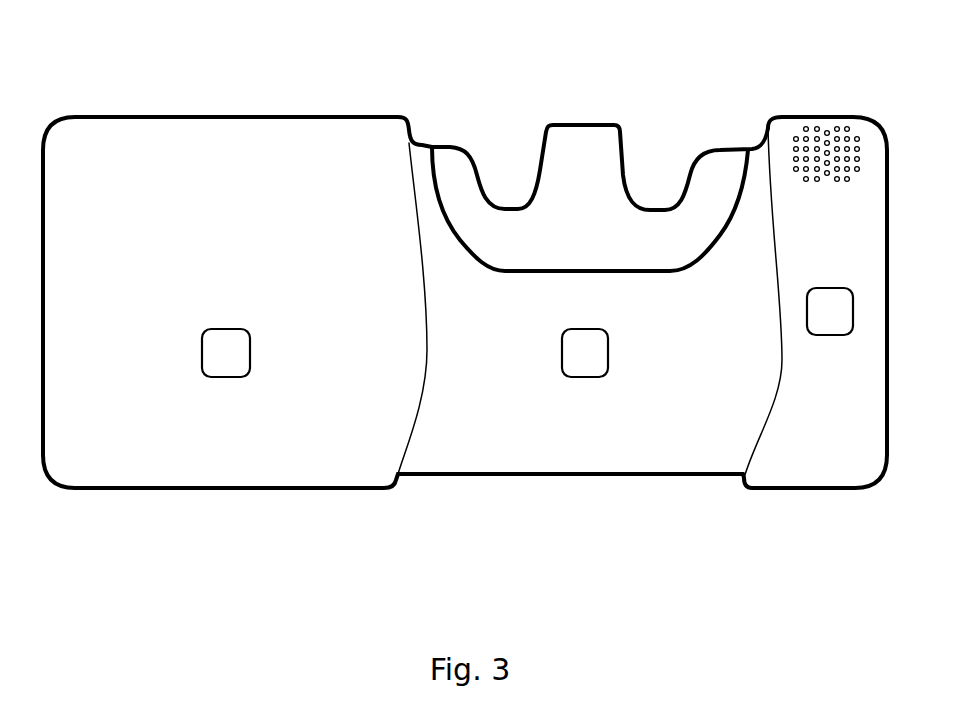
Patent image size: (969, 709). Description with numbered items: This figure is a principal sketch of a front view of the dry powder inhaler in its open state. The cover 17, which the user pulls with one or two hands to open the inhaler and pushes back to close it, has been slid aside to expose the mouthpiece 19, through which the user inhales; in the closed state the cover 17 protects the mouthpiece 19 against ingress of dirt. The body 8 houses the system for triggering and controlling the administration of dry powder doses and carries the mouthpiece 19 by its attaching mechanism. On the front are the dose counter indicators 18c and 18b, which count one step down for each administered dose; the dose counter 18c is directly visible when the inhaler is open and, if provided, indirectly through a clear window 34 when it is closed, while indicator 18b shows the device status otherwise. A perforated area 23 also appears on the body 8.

The cover 17 is at (156, 128).
The mouthpiece 19 is at (582, 142).
The speaker 23 is at (817, 135).
The body 8 is at (771, 488).
The clear window 34 is at (230, 377).
The dose counter 18c is at (583, 377).
The dose counter 18b is at (833, 335).